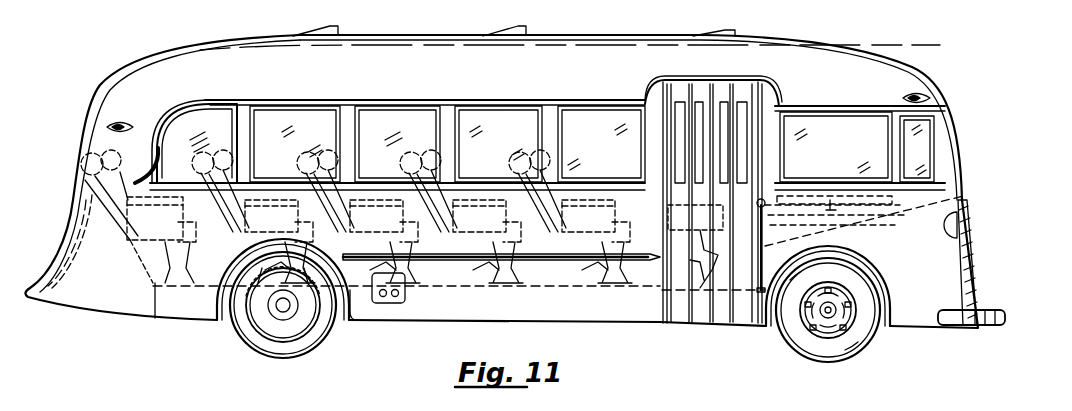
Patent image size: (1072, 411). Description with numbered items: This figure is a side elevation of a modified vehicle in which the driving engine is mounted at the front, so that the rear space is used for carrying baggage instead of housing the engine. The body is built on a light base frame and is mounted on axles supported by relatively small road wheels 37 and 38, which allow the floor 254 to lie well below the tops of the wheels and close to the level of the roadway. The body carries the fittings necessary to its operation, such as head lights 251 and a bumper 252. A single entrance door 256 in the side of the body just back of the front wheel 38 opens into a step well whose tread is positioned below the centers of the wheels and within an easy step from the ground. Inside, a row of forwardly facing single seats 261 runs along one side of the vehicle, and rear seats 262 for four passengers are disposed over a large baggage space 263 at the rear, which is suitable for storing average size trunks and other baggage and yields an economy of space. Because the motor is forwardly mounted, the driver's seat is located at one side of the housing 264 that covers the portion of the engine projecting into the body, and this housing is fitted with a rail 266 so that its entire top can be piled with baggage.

The road wheel 37 is at (309, 336).
The road wheel 38 is at (855, 348).
The head lights 251 is at (957, 217).
The bumper 252 is at (1007, 314).
The floor 254 is at (664, 259).
The entrance door 256 is at (740, 305).
The single seats 261 is at (358, 217).
The rear seats 262 is at (185, 217).
The baggage space 263 is at (102, 300).
The housing 264 is at (928, 259).
The rail 266 is at (767, 228).